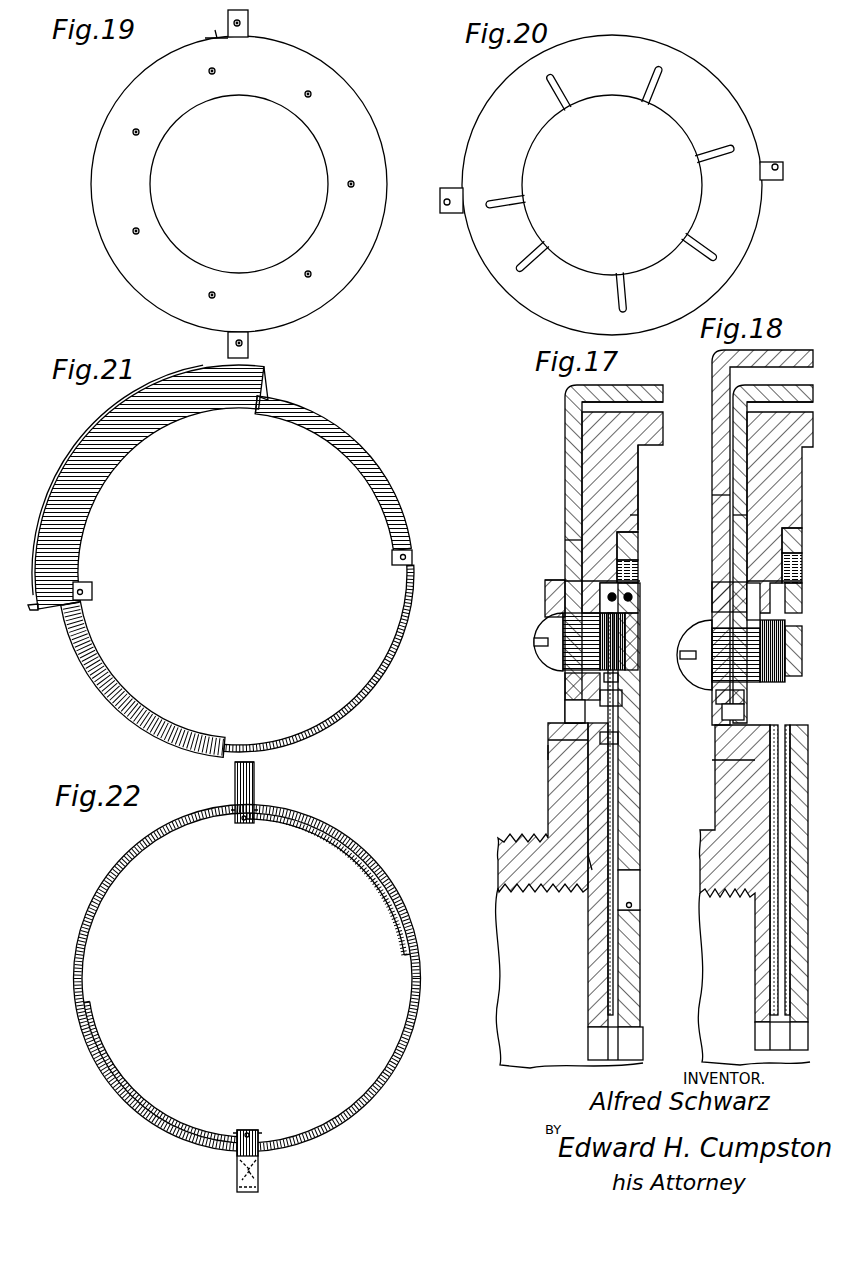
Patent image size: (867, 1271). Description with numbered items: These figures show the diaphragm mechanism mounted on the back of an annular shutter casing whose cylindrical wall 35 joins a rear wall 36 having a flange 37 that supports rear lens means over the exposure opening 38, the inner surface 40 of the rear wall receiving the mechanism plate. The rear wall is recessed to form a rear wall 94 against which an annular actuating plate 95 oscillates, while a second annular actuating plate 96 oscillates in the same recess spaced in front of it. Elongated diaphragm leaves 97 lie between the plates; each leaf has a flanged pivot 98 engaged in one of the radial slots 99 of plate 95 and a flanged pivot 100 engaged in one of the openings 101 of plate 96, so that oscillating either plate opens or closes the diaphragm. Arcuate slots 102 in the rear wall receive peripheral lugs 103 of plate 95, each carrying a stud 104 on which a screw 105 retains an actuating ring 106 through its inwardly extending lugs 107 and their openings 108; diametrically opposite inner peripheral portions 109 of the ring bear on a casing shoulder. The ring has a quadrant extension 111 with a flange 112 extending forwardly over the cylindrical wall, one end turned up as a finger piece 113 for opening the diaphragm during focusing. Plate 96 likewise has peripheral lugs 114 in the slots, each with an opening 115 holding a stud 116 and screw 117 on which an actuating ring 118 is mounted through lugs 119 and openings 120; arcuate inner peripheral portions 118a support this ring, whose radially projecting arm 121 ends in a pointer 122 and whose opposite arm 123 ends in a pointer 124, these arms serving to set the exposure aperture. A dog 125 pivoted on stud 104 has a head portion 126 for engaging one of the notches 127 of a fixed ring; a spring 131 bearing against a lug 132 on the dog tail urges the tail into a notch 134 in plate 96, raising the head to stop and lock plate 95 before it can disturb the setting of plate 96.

In FIG. 17, the cylindrical wall 35 is at (660, 426).
In FIG. 17, the rear wall 36 is at (630, 515).
In FIG. 17, the flange 37 is at (495, 840).
In FIG. 17, the exposure opening 38 is at (640, 1040).
In FIG. 17, the inner surface 40 is at (640, 488).
In FIG. 17, the rear wall of recess 94 is at (590, 792).
In FIG. 20, the actuating plate 95 is at (723, 95).
In FIG. 17, the actuating plate 95 is at (562, 790).
In FIG. 18, the actuating plate 95 is at (740, 783).
In FIG. 19, the actuating plate 96 is at (380, 150).
In FIG. 17, the actuating plate 96 is at (638, 831).
In FIG. 18, the actuating plate 96 is at (800, 927).
In FIG. 17, the diaphragm leaves 97 is at (615, 781).
In FIG. 18, the diaphragm leaves 97 is at (786, 962).
In FIG. 17, the flanged pivot 98 is at (593, 930).
In FIG. 20, the radial slots 99 is at (647, 86).
In FIG. 17, the radial slots 99 is at (590, 862).
In FIG. 17, the flanged pivot 100 is at (640, 892).
In FIG. 19, the openings 101 is at (305, 93).
In FIG. 17, the openings 101 is at (634, 905).
In FIG. 17, the arcuate slots 102 is at (583, 580).
In FIG. 18, the arcuate slots 102 is at (765, 580).
In FIG. 20, the peripheral lugs 103 is at (452, 192).
In FIG. 21, the peripheral lugs 103 is at (352, 462).
In FIG. 17, the peripheral lugs 103 is at (545, 599).
In FIG. 17, the stud 104 is at (565, 681).
In FIG. 17, the screw 105 is at (538, 635).
In FIG. 21, the actuating ring 106 is at (407, 616).
In FIG. 17, the actuating ring 106 is at (570, 551).
In FIG. 18, the actuating ring 106 is at (742, 515).
In FIG. 21, the inwardly extending lugs 107 is at (92, 593).
In FIG. 17, the inwardly extending lugs 107 is at (565, 707).
In FIG. 21, the openings 108 is at (84, 594).
In FIG. 21, the inner peripheral portions 109 is at (147, 701).
In FIG. 21, the quadrant extension 111 is at (100, 446).
In FIG. 17, the quadrant extension 111 is at (572, 455).
In FIG. 18, the quadrant extension 111 is at (740, 458).
In FIG. 21, the flange 112 is at (103, 424).
In FIG. 17, the flange 112 is at (640, 387).
In FIG. 18, the flange 112 is at (788, 386).
In FIG. 21, the finger piece 113 is at (33, 612).
In FIG. 19, the peripheral lugs 114 is at (250, 22).
In FIG. 18, the peripheral lugs 114 is at (795, 593).
In FIG. 19, the opening 115 is at (240, 28).
In FIG. 18, the stud 116 is at (730, 718).
In FIG. 18, the screw 117 is at (706, 626).
In FIG. 22, the actuating ring 118 is at (367, 864).
In FIG. 17, the actuating ring 118 is at (556, 581).
In FIG. 18, the actuating ring 118 is at (722, 495).
In FIG. 22, the arcuate inner peripheral portions 118a is at (376, 879).
In FIG. 22, the inwardly extending lugs 119 is at (246, 822).
In FIG. 18, the inwardly extending lugs 119 is at (727, 704).
In FIG. 22, the openings 120 is at (238, 820).
In FIG. 22, the radially projecting arm 121 is at (255, 792).
In FIG. 18, the radially projecting arm 121 is at (728, 356).
In FIG. 22, the pointer 122 is at (254, 764).
In FIG. 22, the arm 123 is at (259, 1156).
In FIG. 22, the pointer 124 is at (237, 1158).
In FIG. 17, the dog 125 is at (640, 591).
In FIG. 17, the head portion 126 is at (640, 541).
In FIG. 17, the notches 127 is at (640, 566).
In FIG. 17, the spring 131 is at (620, 690).
In FIG. 17, the lug 132 is at (625, 711).
In FIG. 19, the notch 134 is at (216, 30).
In FIG. 17, the notch 134 is at (641, 745).